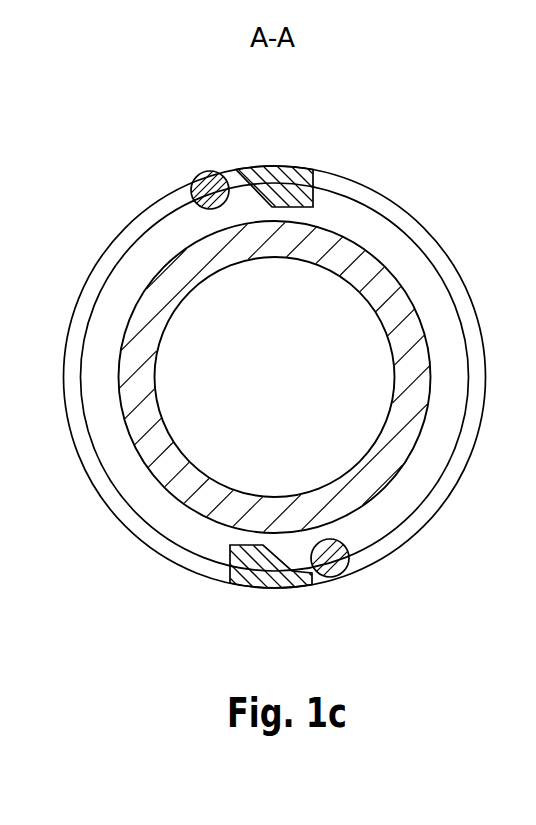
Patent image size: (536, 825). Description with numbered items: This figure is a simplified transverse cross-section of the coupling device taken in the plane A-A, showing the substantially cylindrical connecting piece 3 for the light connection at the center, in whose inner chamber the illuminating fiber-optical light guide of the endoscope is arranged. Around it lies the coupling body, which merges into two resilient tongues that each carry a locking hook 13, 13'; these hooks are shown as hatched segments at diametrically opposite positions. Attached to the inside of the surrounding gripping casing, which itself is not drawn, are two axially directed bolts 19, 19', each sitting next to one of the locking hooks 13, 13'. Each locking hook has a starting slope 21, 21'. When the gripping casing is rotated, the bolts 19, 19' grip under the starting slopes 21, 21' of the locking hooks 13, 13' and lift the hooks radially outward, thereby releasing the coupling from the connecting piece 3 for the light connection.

The connecting piece for the light connection 3 is at (187, 277).
The locking hook 13 is at (328, 165).
The locking hook 13' is at (217, 599).
The bolt 19 is at (173, 155).
The bolt 19' is at (379, 579).
The starting slope 21 is at (284, 149).
The starting slope 21' is at (286, 602).